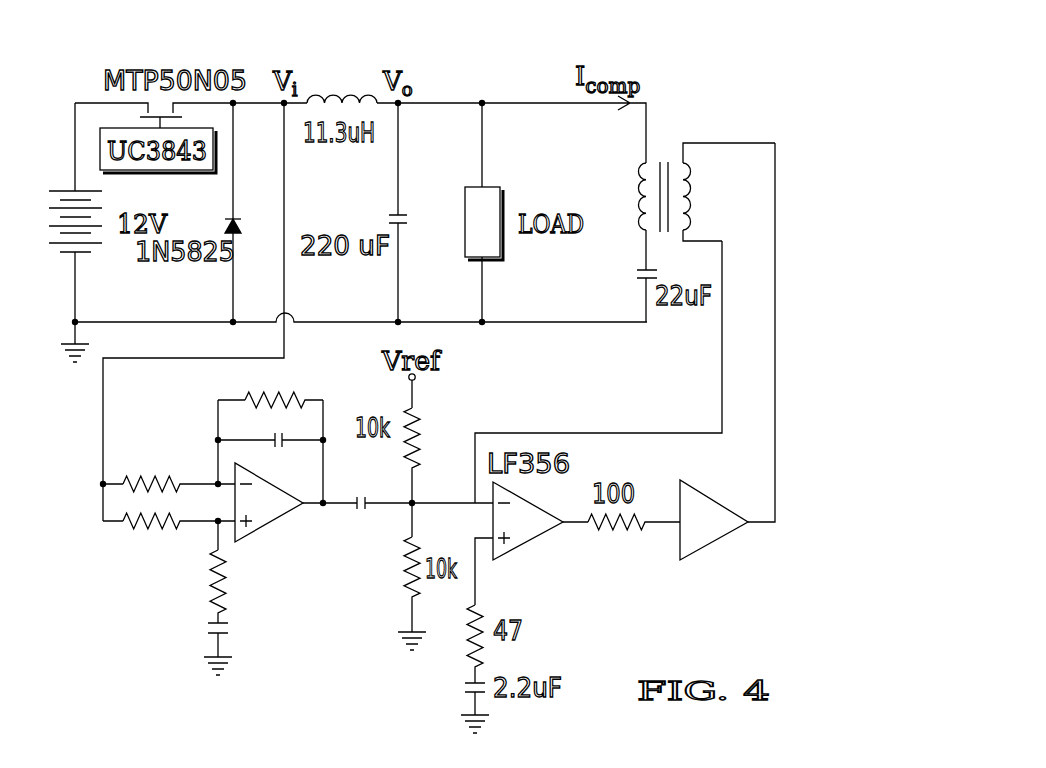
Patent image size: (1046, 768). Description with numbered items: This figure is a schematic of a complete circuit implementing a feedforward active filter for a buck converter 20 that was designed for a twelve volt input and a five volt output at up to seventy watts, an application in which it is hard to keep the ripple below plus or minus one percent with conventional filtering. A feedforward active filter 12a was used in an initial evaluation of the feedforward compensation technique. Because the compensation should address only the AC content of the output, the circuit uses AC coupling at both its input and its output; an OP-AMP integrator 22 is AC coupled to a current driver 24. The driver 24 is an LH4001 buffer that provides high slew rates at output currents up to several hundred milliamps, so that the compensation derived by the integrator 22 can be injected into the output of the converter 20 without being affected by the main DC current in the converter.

The buck converter 20 is at (723, 77).
The OP-AMP integrator 22 is at (267, 555).
The current driver 24 is at (715, 543).
The feedforward active filter 12a is at (157, 610).